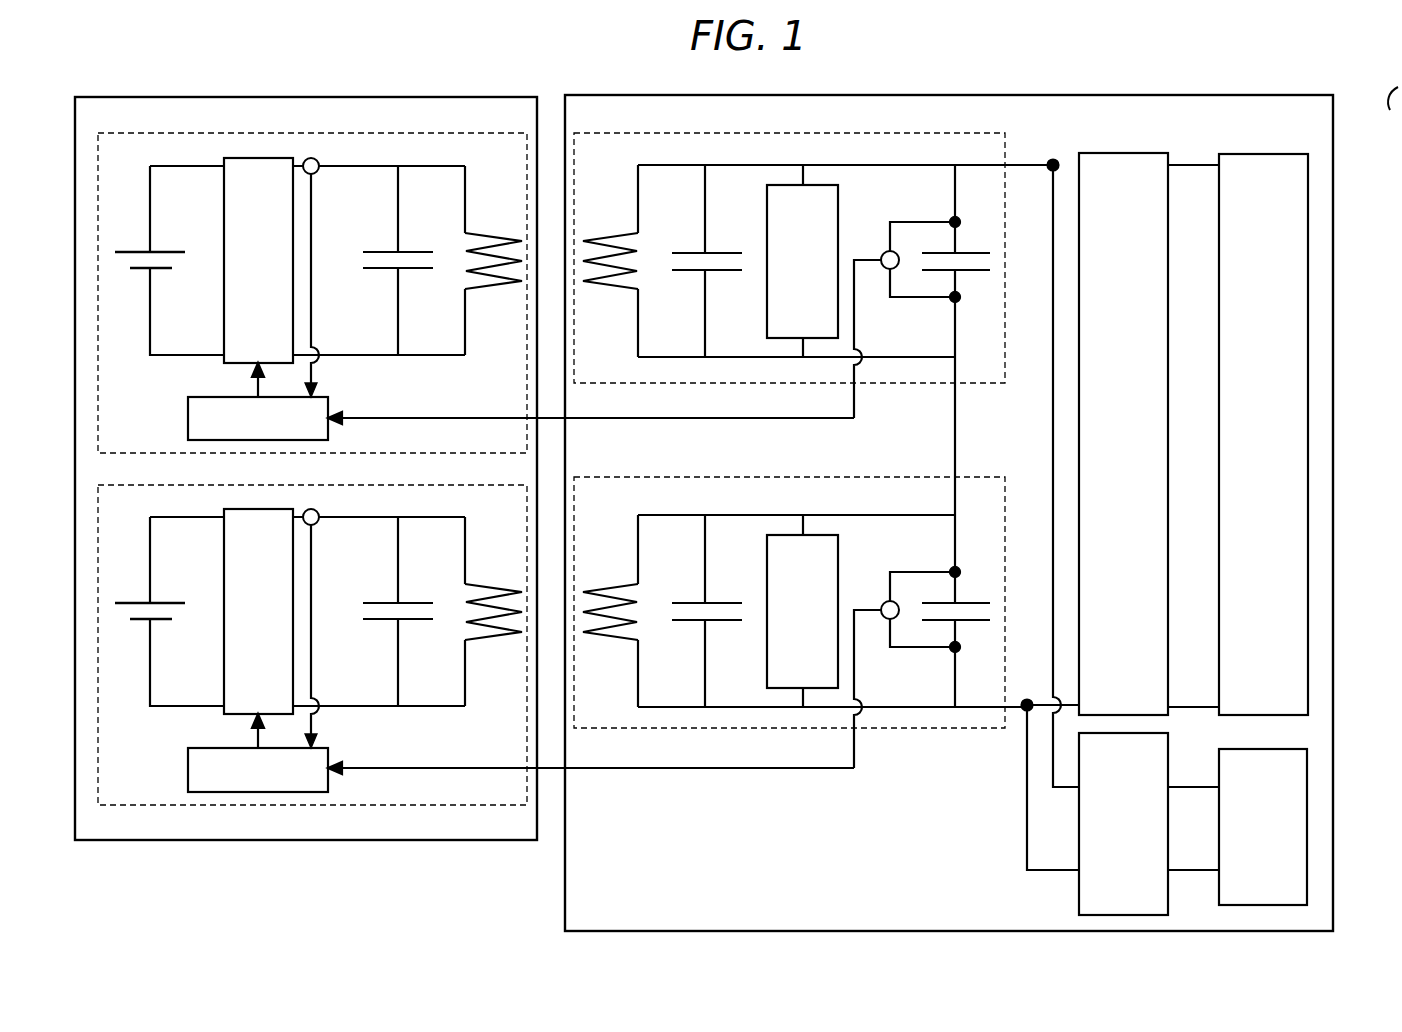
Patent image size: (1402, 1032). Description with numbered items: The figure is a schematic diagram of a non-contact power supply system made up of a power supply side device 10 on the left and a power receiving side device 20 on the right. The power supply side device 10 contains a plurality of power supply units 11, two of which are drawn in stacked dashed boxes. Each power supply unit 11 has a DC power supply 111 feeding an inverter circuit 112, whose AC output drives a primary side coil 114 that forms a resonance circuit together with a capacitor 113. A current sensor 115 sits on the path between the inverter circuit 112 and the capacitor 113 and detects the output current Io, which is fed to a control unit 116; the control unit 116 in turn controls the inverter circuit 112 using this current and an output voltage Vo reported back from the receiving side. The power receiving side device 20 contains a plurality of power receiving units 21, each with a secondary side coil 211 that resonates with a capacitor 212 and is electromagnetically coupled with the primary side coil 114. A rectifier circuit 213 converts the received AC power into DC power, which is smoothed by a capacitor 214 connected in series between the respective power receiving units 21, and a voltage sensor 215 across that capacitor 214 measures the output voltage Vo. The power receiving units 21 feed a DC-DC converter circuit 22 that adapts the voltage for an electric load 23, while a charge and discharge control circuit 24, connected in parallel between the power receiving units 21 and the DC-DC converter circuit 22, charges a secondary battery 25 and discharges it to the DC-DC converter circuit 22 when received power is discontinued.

The power supply side device 10 is at (490, 97).
The power supply unit 11 is at (480, 133).
The DC power supply 111 is at (168, 252).
The inverter circuit 112 is at (224, 318).
The capacitor 113 is at (418, 252).
The primary side coil 114 is at (484, 233).
The current sensor 115 is at (322, 162).
The control unit 116 is at (328, 402).
The power receiving side device 20 is at (1281, 79).
The power receiving unit 21 is at (970, 133).
The secondary side coil 211 is at (598, 233).
The capacitor 212 is at (722, 253).
The rectifier circuit 213 is at (838, 208).
The capacitor 214 is at (975, 253).
The voltage sensor 215 is at (881, 256).
The DC-DC converter circuit 22 is at (1168, 153).
The electric load 23 is at (1309, 154).
The charge and discharge control circuit 24 is at (1168, 759).
The secondary battery 25 is at (1300, 733).